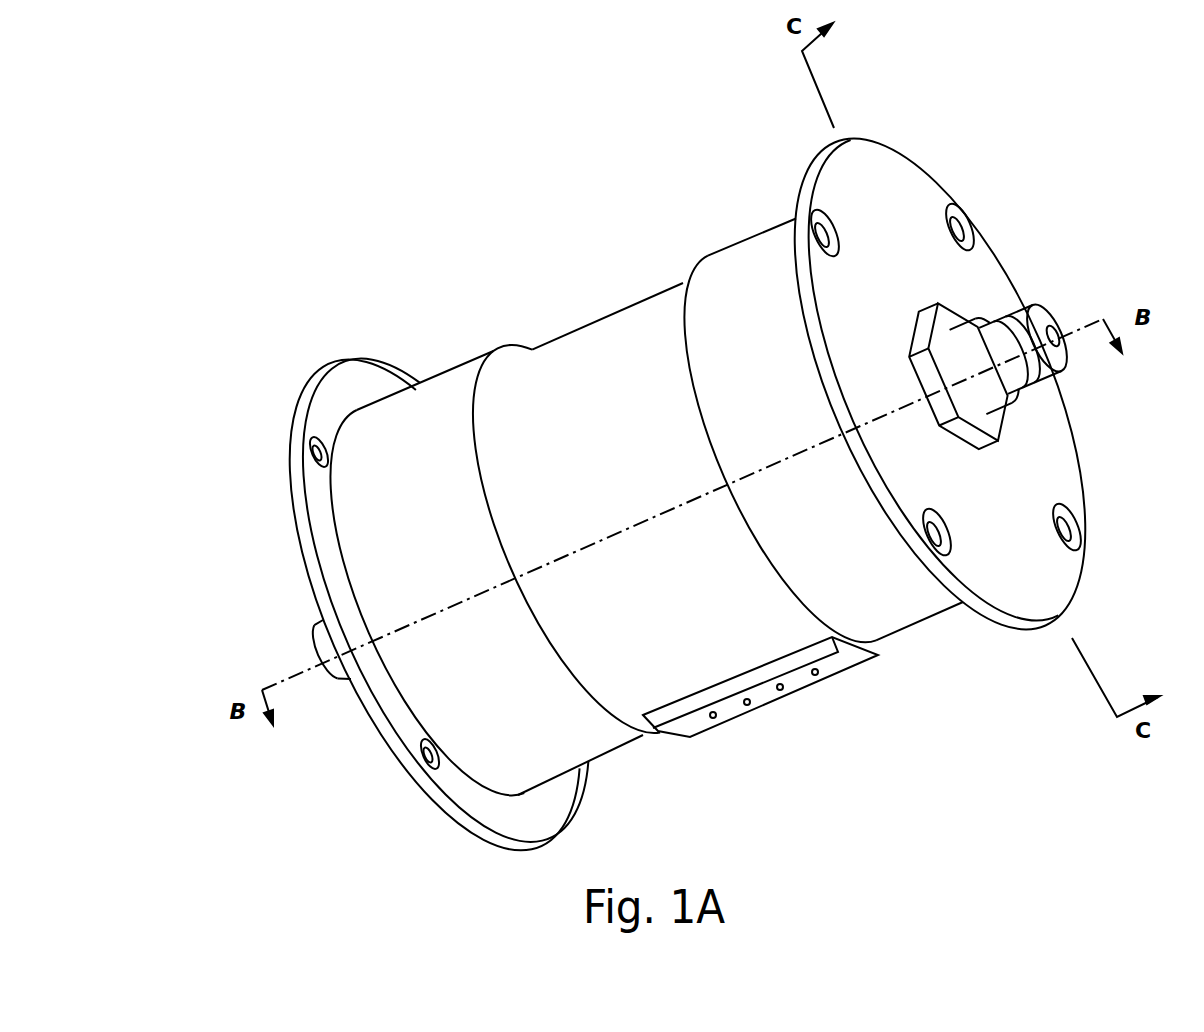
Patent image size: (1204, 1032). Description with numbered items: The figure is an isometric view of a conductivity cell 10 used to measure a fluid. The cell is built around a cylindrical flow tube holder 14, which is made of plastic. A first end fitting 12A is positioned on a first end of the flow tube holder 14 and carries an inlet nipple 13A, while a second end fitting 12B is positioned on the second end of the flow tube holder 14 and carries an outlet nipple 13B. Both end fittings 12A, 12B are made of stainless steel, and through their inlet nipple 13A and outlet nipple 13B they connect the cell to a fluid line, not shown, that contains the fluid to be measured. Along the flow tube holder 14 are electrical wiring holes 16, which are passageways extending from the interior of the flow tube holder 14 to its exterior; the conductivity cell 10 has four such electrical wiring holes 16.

The conductivity cell 10 is at (317, 165).
The first end fitting 12A is at (383, 523).
The second end fitting 12B is at (1032, 462).
The inlet nipple 13A is at (325, 630).
The outlet nipple 13B is at (985, 334).
The flow tube holder 14 is at (598, 368).
The electrical wiring holes 16 is at (713, 715).